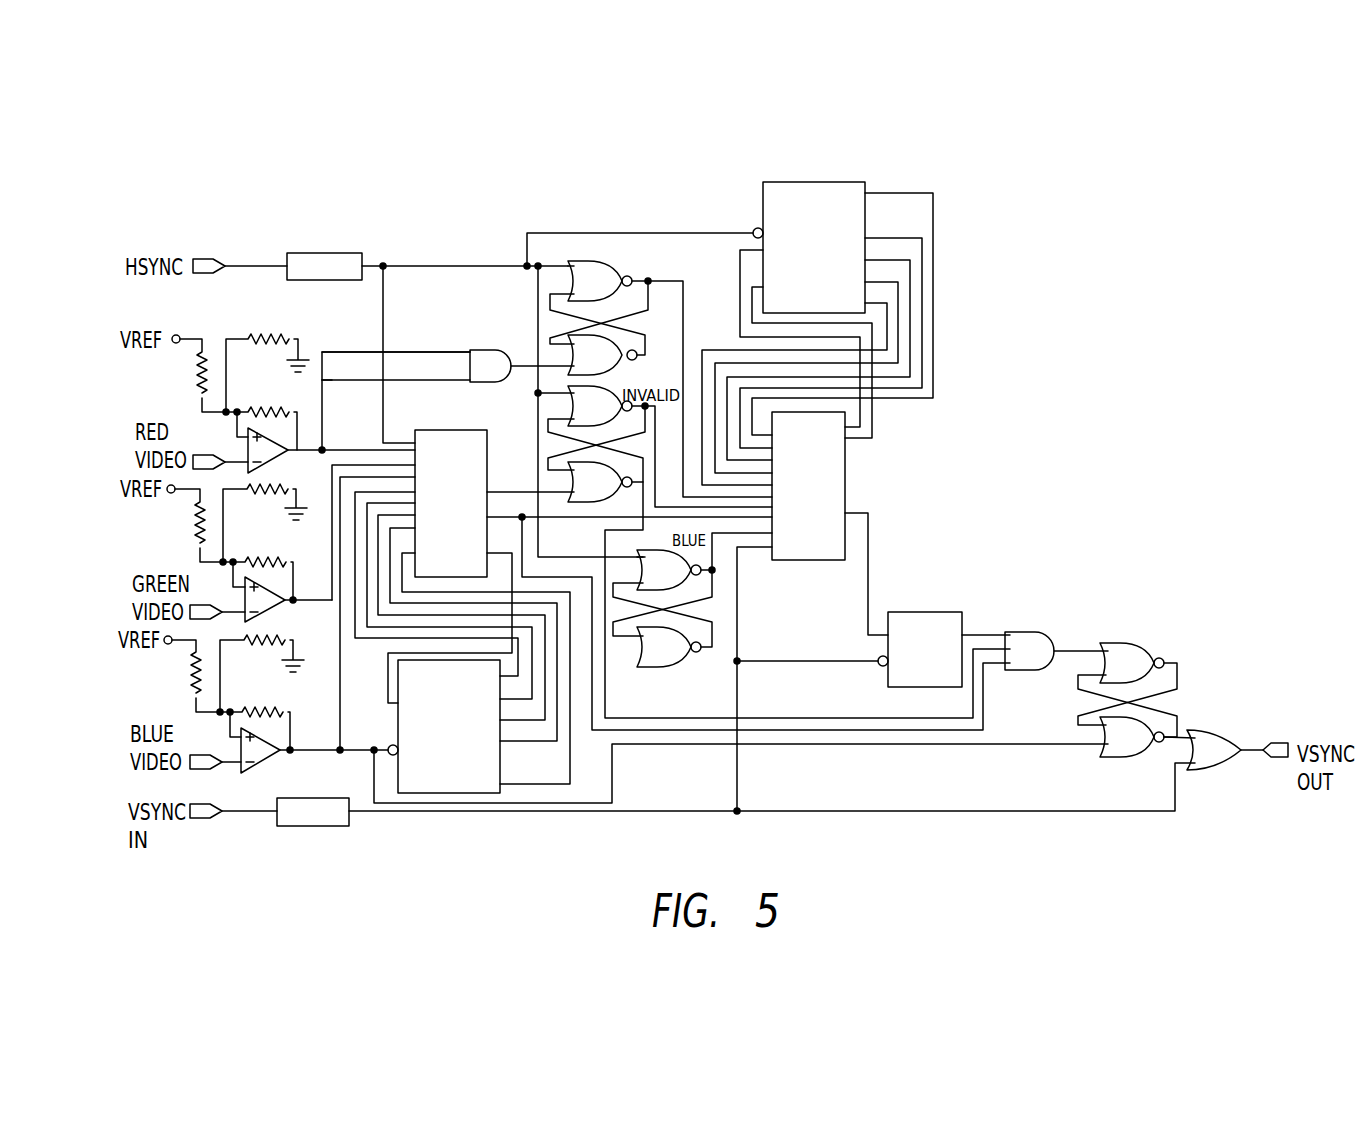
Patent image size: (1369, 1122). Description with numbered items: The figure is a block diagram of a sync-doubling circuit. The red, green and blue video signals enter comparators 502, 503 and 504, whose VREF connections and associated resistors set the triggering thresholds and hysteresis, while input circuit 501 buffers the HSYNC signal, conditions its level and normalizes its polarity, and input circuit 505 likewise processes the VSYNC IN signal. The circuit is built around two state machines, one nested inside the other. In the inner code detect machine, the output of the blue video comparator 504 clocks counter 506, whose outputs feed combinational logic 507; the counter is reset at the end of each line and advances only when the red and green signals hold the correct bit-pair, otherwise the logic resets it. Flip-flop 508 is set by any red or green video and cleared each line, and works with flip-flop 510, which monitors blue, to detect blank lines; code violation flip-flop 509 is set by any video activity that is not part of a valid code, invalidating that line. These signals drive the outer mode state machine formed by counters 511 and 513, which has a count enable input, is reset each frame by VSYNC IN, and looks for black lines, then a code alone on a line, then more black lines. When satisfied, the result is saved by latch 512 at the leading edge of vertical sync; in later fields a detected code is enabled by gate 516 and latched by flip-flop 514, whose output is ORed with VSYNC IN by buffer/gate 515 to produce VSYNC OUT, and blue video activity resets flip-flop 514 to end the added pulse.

The input circuit 501 is at (345, 252).
The comparator 502 is at (245, 460).
The comparator 503 is at (242, 598).
The blue video comparator 504 is at (238, 748).
The input circuit 505 is at (295, 827).
The counter 506 is at (433, 795).
The combinational logic 507 is at (458, 430).
The flip-flop 508 is at (588, 262).
The code violation flip-flop 509 is at (615, 390).
The flip-flop 510 is at (650, 662).
The counter 511 is at (798, 560).
The latch 512 is at (888, 680).
The counter 513 is at (868, 187).
The flip-flop 514 is at (1122, 642).
The buffer/gate 515 is at (1200, 730).
The gate 516 is at (1016, 631).